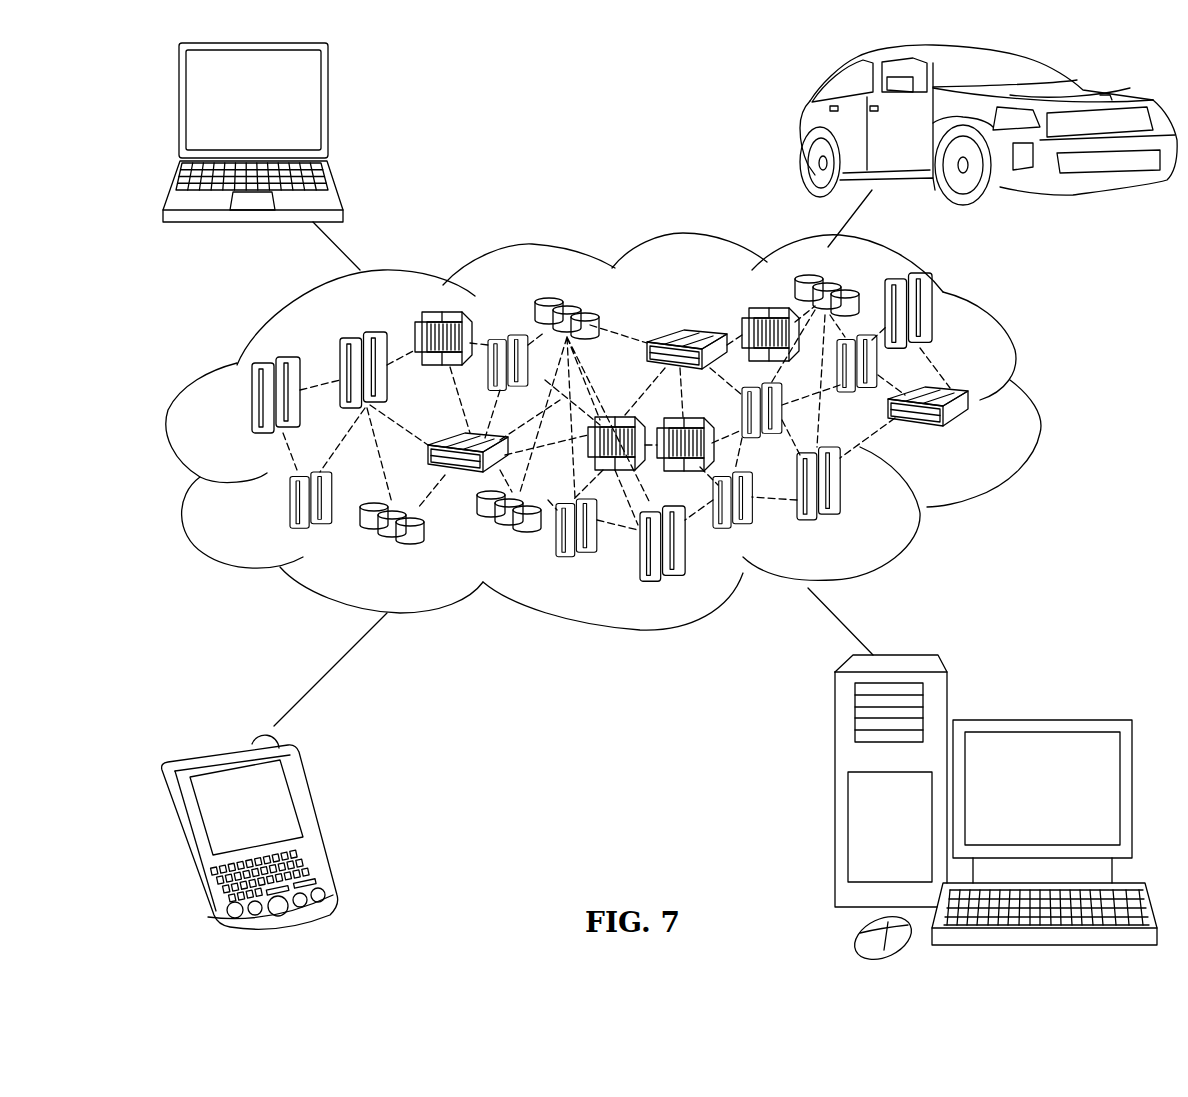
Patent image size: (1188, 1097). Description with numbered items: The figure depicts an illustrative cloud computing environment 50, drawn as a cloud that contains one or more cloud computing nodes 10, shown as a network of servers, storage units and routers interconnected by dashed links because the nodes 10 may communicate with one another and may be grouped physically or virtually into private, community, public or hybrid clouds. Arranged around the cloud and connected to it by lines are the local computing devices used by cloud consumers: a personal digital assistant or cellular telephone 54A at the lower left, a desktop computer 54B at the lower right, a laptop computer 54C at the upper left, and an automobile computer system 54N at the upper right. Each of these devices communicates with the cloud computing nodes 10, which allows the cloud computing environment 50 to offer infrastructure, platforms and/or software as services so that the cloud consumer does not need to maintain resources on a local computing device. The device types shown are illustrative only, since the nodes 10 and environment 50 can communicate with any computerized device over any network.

The cloud computing environment 50 is at (1040, 402).
The cloud computing nodes 10 is at (976, 436).
The personal digital assistant (PDA) or cellular telephone 54A is at (317, 820).
The desktop computer 54B is at (1038, 718).
The laptop computer 54C is at (330, 110).
The automobile computer system 54N is at (802, 129).